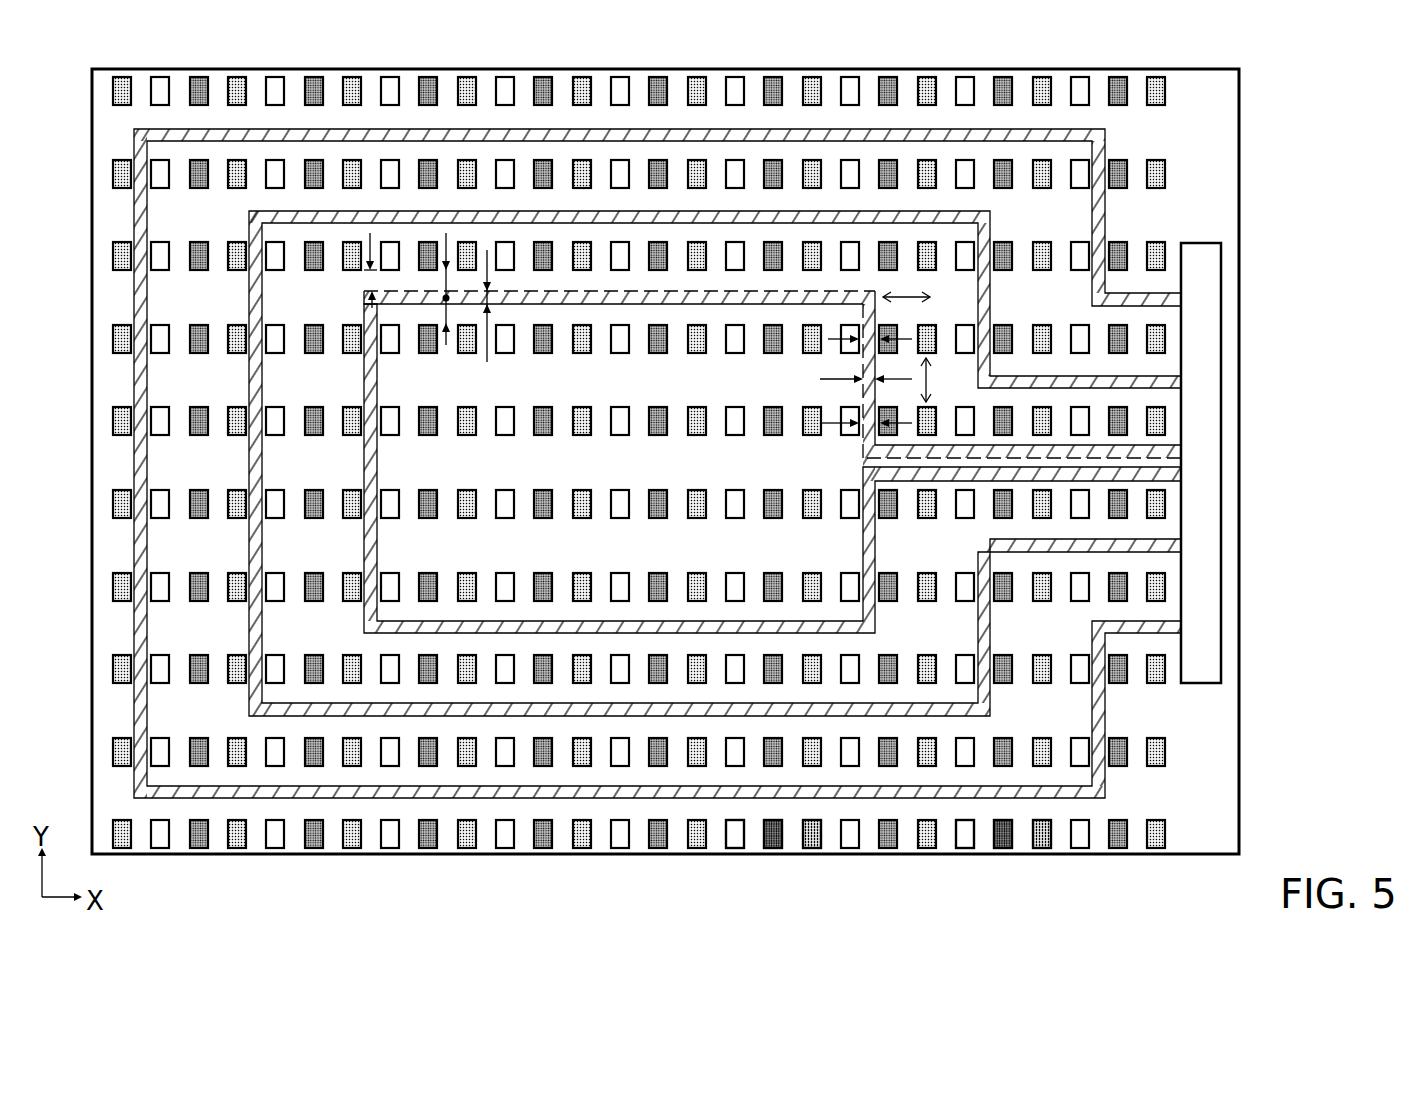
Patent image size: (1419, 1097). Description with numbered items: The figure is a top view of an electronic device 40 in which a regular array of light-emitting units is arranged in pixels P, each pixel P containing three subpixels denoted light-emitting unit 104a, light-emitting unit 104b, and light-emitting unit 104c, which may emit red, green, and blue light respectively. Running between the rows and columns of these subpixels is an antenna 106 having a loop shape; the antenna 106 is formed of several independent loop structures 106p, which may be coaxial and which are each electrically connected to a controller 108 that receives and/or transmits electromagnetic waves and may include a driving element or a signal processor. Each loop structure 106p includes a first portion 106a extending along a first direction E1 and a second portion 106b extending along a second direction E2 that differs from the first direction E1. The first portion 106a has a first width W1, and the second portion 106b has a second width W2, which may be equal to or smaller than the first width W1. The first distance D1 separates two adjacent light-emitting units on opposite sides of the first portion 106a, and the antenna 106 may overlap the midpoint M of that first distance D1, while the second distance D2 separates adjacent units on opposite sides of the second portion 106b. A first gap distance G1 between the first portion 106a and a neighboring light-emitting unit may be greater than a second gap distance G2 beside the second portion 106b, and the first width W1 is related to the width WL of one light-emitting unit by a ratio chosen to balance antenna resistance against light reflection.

The electronic device 40 is at (66, 49).
The light-emitting unit 104a is at (728, 838).
The light-emitting unit 104b is at (772, 848).
The light-emitting unit 104c is at (817, 838).
The antenna 106 is at (758, 409).
The loop structure 106p is at (637, 130).
The first portion 106a is at (565, 292).
The second portion 106b is at (862, 458).
The controller 108 is at (1200, 345).
The pixel P is at (1314, 593).
The first gap distance G1 is at (358, 250).
The second gap distance G2 is at (822, 423).
The first distance D1 is at (446, 318).
The second distance D2 is at (828, 339).
The first width W1 is at (488, 327).
The second width W2 is at (847, 389).
The width of light-emitting unit WL is at (386, 332).
The first direction E1 is at (923, 304).
The second direction E2 is at (942, 381).
The midpoint M is at (444, 300).